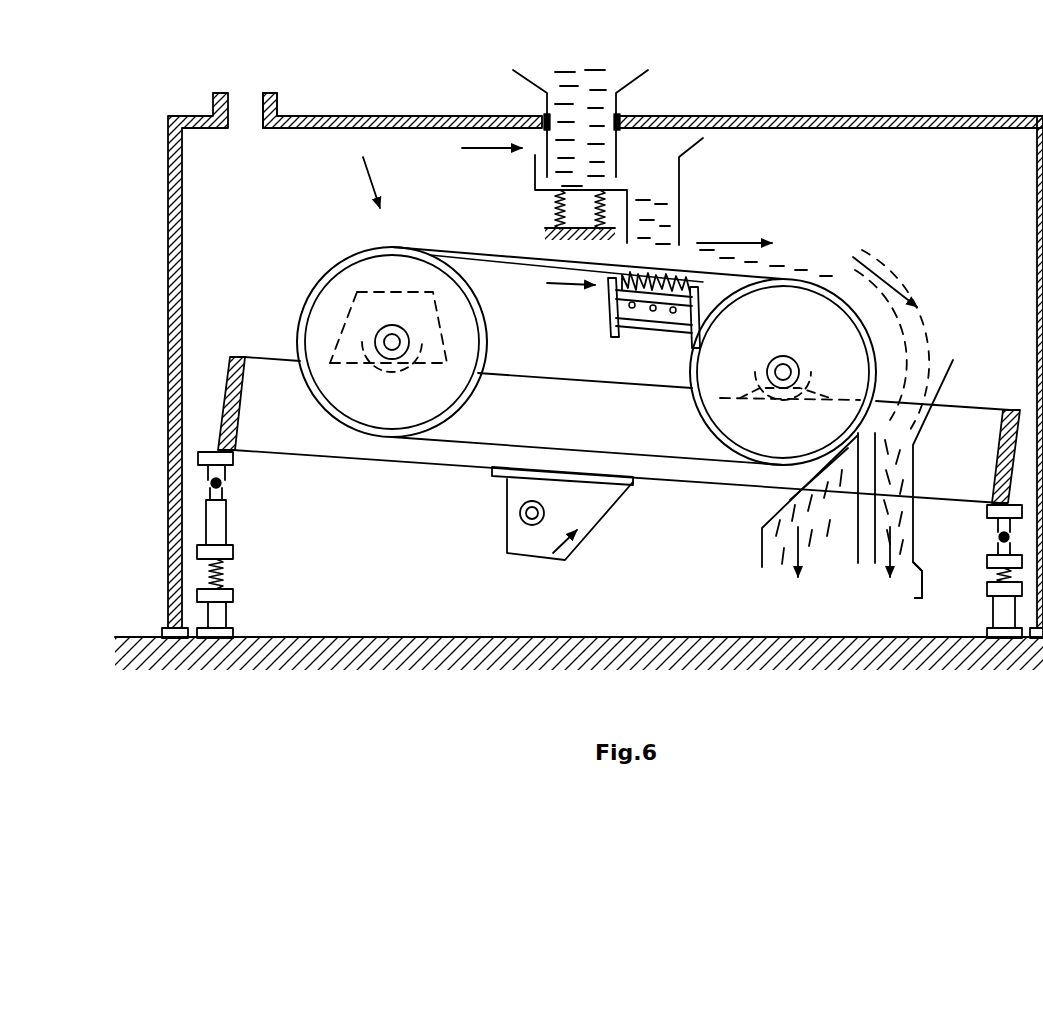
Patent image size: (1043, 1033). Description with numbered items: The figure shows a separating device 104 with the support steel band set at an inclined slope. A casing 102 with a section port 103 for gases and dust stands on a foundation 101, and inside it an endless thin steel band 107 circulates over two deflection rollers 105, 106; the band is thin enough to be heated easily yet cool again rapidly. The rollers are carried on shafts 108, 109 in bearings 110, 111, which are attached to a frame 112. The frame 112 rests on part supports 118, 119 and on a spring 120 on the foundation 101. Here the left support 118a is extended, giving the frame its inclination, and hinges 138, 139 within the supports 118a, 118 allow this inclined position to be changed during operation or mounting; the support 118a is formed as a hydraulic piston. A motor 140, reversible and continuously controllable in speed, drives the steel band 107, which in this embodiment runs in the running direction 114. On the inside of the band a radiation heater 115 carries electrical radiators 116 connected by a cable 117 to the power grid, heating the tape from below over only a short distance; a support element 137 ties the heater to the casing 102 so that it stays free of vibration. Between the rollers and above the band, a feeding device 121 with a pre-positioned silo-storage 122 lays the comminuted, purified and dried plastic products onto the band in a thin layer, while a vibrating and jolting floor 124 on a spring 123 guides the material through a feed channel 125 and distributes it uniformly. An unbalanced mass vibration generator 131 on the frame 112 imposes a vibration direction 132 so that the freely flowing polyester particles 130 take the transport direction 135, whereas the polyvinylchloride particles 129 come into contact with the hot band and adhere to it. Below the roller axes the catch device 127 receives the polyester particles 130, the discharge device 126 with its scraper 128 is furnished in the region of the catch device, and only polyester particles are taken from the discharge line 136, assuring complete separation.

The foundation 101 is at (579, 676).
The casing 102 is at (602, 365).
The section port 103 is at (307, 104).
The separating device 104 is at (349, 186).
The deflection roller 105 is at (504, 342).
The deflection roller 106 is at (789, 339).
The steel band 107 is at (616, 458).
The shaft 108 is at (404, 371).
The shaft 109 is at (791, 402).
The bearing 110 is at (388, 374).
The bearing 111 is at (790, 405).
The frame 112 is at (611, 413).
The running direction 114 is at (731, 228).
The radiation heater 115 is at (545, 280).
The electrical radiators 116 is at (755, 315).
The cable 117 is at (610, 323).
The support 118 is at (972, 555).
The left support 118a is at (258, 530).
The support 119 is at (609, 656).
The spring 120 is at (609, 593).
The feeding device 121 is at (465, 148).
The silo-storage 122 is at (625, 126).
The spring 123 is at (551, 215).
The vibrating and jolting floor 124 is at (545, 199).
The feed channel 125 is at (734, 207).
The discharge device 126 is at (726, 560).
The catch device 127 is at (950, 479).
The scraper 128 is at (774, 500).
The polyvinylchloride particles 129 is at (803, 566).
The polyester particles 130 is at (890, 566).
The unbalanced mass vibration generator 131 is at (522, 513).
The vibration direction 132 is at (560, 525).
The transport direction 135 is at (903, 340).
The discharge line 136 is at (869, 594).
The support element 137 is at (617, 327).
The hinge 138 is at (250, 479).
The hinge 139 is at (975, 530).
The motor 140 is at (388, 314).